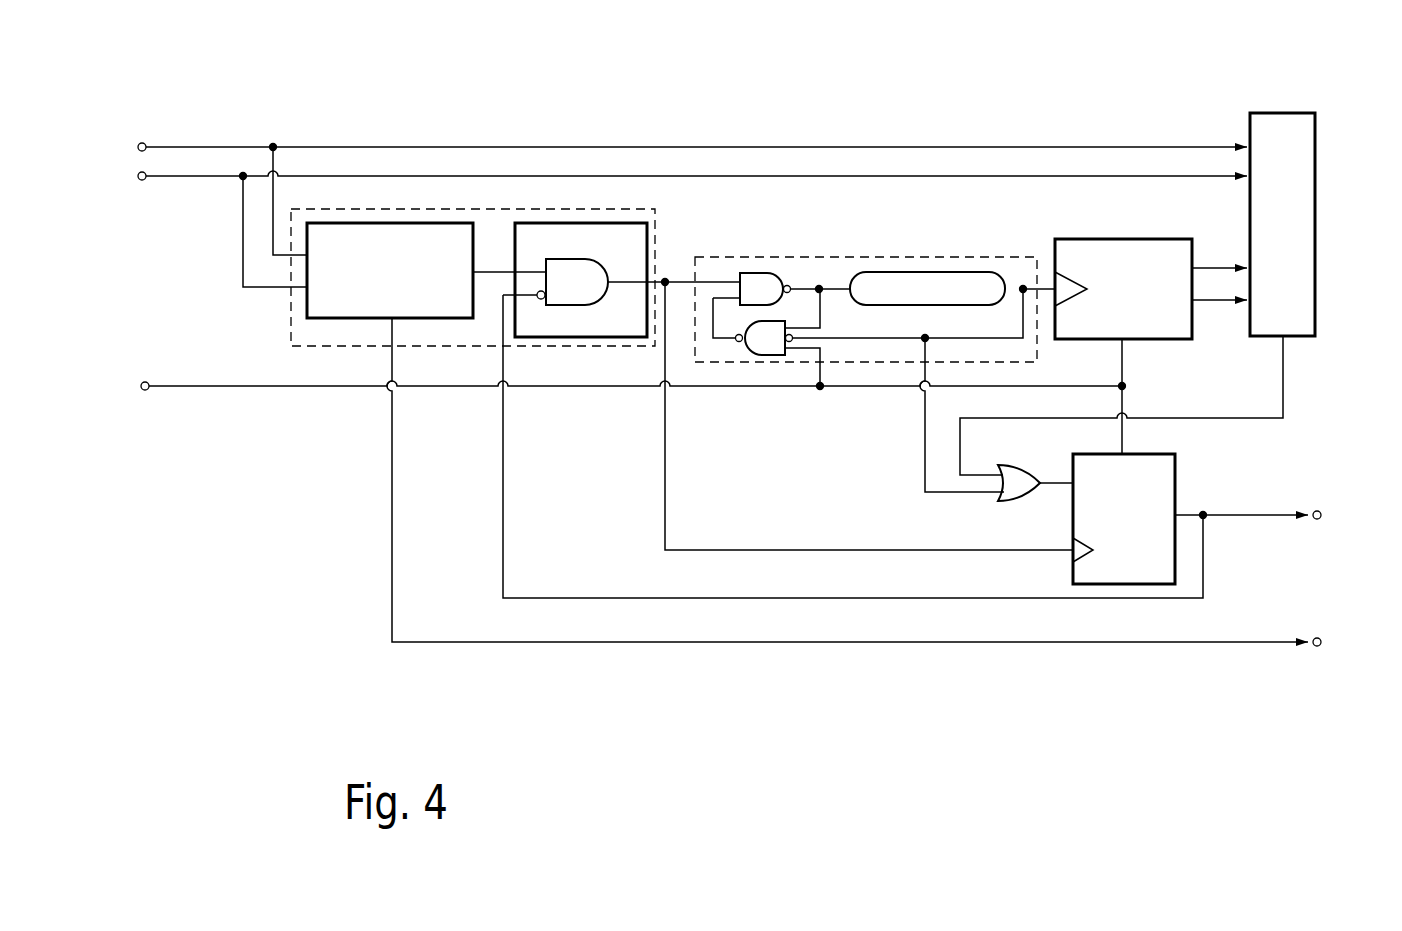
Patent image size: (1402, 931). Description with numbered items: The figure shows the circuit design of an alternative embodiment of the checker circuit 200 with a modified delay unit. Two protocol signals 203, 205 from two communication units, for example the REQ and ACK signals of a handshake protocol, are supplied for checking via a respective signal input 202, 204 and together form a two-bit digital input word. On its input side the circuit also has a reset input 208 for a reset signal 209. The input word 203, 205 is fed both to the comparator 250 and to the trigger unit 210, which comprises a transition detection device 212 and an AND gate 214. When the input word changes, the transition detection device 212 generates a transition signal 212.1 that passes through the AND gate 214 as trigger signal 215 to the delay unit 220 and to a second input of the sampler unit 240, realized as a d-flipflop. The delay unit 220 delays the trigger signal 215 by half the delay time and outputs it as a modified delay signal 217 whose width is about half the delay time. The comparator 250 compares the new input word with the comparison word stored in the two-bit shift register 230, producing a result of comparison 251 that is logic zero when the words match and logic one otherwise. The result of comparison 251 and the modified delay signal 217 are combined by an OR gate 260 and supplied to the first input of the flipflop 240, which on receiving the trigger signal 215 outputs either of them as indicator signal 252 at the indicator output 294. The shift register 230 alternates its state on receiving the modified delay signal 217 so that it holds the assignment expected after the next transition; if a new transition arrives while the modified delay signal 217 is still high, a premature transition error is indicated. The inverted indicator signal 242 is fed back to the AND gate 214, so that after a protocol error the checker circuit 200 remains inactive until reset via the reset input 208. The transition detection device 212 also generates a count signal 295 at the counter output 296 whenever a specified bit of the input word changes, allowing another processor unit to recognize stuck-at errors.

The checker circuit 200 is at (813, 718).
The signal input 202 is at (138, 143).
The protocol signal 203 is at (340, 146).
The signal input 204 is at (139, 180).
The protocol signal 205 is at (430, 175).
The reset input 208 is at (141, 389).
The reset signal 209 is at (715, 397).
The trigger unit 210 is at (656, 215).
The transition detection device 212 is at (306, 303).
The transition signal 212.1 is at (493, 275).
The AND gate 214 is at (549, 307).
The trigger signal 215 is at (668, 280).
The modified delay signal 217 is at (1040, 288).
The delay unit 220 is at (818, 256).
The shift register 230 is at (1118, 238).
The sampler unit 240 is at (1072, 521).
The inverted indicator signal 242 is at (538, 291).
The comparator 250 is at (1280, 112).
The result of comparison 251 is at (1284, 380).
The indicator signal 252 is at (1255, 518).
The OR gate 260 is at (1022, 466).
The indicator output 294 is at (1322, 515).
The count signal 295 is at (895, 643).
The counter output 296 is at (1322, 642).